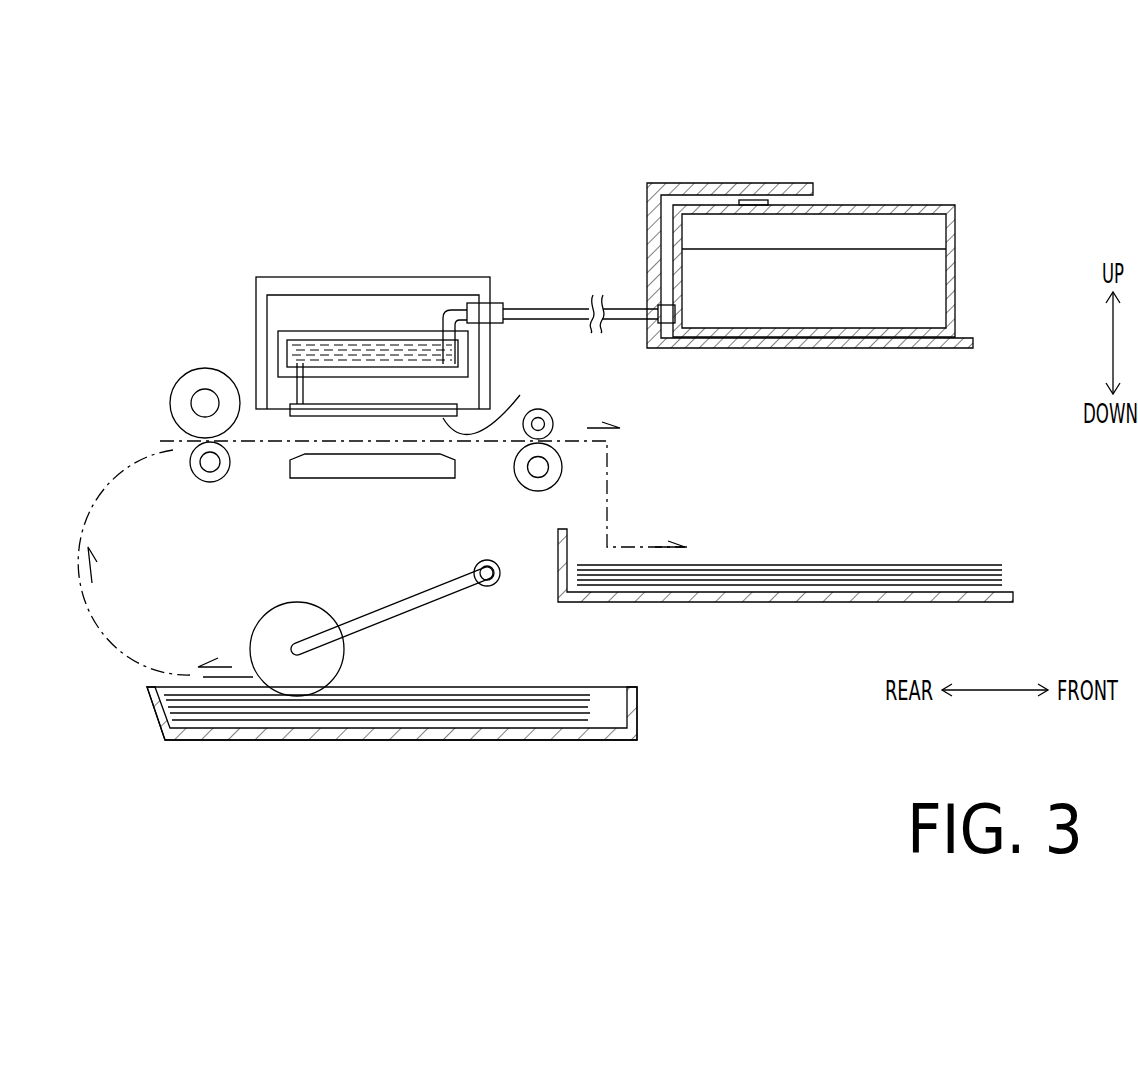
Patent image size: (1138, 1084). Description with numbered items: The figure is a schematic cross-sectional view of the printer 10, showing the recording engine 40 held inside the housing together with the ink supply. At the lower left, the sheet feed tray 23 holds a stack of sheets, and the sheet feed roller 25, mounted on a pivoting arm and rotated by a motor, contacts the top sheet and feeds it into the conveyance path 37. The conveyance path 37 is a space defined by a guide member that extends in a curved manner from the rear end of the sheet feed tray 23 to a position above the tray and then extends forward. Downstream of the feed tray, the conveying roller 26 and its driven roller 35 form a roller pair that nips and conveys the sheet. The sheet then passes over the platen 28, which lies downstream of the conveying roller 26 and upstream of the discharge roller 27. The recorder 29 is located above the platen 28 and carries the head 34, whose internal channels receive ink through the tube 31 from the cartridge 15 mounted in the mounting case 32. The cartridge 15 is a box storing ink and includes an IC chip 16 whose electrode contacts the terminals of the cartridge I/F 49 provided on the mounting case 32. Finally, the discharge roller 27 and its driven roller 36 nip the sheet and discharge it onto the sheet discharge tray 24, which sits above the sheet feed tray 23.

The printer 10 is at (184, 264).
The recording engine 40 is at (121, 359).
The cartridge 15 is at (869, 205).
The IC chip 16 is at (746, 207).
The sheet feed tray 23 is at (580, 687).
The sheet discharge tray 24 is at (740, 603).
The sheet feed roller 25 is at (297, 602).
The conveying roller 26 is at (202, 368).
The discharge roller 27 is at (531, 492).
The platen 28 is at (343, 478).
The recorder 29 is at (313, 261).
The tube 31 is at (546, 308).
The mounting case 32 is at (708, 183).
The head 34 is at (487, 401).
The driven roller 35 is at (212, 483).
The driven roller 36 is at (544, 412).
The conveyance path 37 is at (138, 476).
The cartridge I/F 49 is at (766, 203).